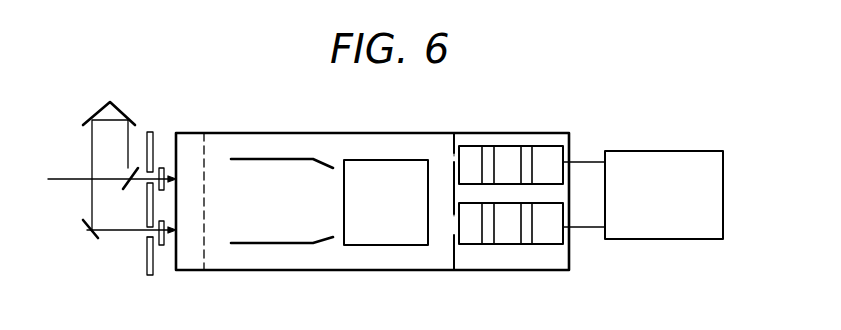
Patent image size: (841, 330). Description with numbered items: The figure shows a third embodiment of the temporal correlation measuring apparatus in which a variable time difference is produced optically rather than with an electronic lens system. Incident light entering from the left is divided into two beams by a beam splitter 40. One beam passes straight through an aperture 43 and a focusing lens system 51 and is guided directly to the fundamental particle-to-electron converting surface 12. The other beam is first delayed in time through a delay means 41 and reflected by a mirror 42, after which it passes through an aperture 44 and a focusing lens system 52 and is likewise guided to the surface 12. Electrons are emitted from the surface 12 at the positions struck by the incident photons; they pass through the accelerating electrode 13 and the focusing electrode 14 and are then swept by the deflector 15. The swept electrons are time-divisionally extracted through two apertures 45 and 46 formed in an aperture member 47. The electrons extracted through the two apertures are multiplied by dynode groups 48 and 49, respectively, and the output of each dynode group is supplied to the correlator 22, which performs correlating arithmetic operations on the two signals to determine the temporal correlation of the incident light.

The fundamental particle-to-electron converting surface 12 is at (176, 262).
The accelerating electrode 13 is at (205, 255).
The focusing electrode 14 is at (270, 244).
The deflector 15 is at (383, 246).
The correlator 22 is at (660, 150).
The beam splitter 40 is at (133, 168).
The delay means 41 is at (105, 113).
The mirror 42 is at (81, 238).
The aperture 43 is at (157, 170).
The aperture 44 is at (146, 238).
The aperture 45 is at (450, 163).
The aperture 46 is at (453, 228).
The aperture member 47 is at (457, 140).
The dynode group 48 is at (510, 155).
The dynode group 49 is at (510, 245).
The focusing lens system 51 is at (166, 170).
The focusing lens system 52 is at (162, 247).